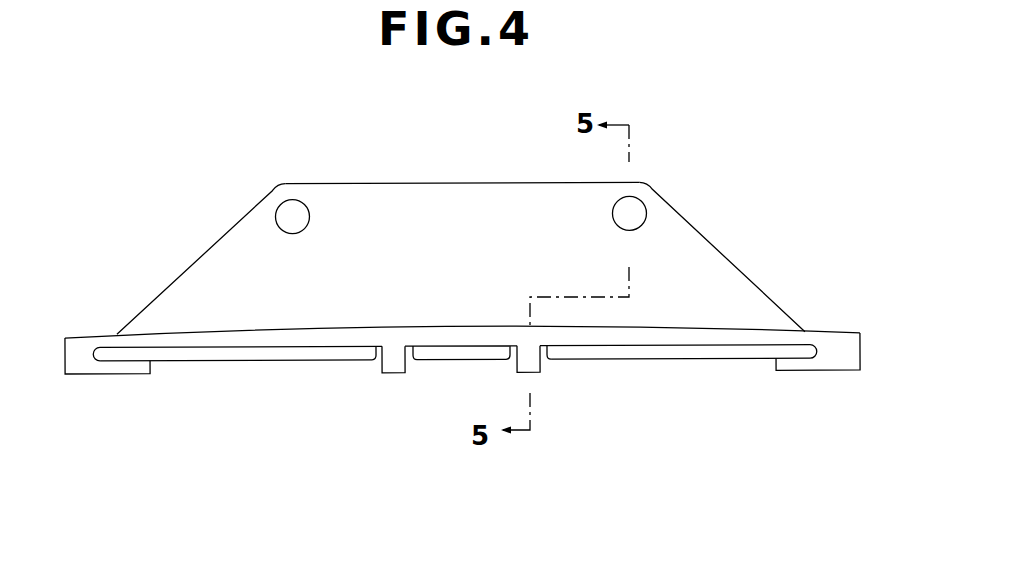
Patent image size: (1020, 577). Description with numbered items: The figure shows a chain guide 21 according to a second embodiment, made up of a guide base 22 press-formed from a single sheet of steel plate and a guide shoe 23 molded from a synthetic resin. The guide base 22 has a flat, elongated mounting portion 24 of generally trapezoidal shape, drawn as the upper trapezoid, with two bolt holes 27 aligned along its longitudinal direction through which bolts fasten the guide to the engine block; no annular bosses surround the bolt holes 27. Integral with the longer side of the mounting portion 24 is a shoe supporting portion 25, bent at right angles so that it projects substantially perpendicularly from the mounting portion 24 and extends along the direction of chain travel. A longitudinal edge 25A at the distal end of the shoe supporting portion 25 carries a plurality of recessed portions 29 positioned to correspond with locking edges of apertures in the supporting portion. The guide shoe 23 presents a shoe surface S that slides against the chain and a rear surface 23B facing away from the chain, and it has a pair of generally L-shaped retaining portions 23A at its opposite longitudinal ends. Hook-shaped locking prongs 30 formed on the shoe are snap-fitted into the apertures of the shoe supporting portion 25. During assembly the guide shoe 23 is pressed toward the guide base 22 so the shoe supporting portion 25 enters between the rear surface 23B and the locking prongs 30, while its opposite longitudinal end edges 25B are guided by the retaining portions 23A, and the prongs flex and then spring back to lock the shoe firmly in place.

The chain guide 21 is at (470, 366).
The guide base 22 is at (730, 250).
The guide shoe 23 is at (820, 327).
The retaining portion 23A is at (98, 374).
The rear surface 23B is at (217, 350).
The mounting portion 24 is at (457, 183).
The shoe supporting portion 25 is at (733, 359).
The longitudinal edge 25A is at (682, 347).
The longitudinal end edge 25B is at (112, 350).
The bolt hole 27 is at (293, 199).
The recessed portion 29 is at (378, 360).
The locking prong 30 is at (396, 373).
The shoe surface S is at (437, 327).